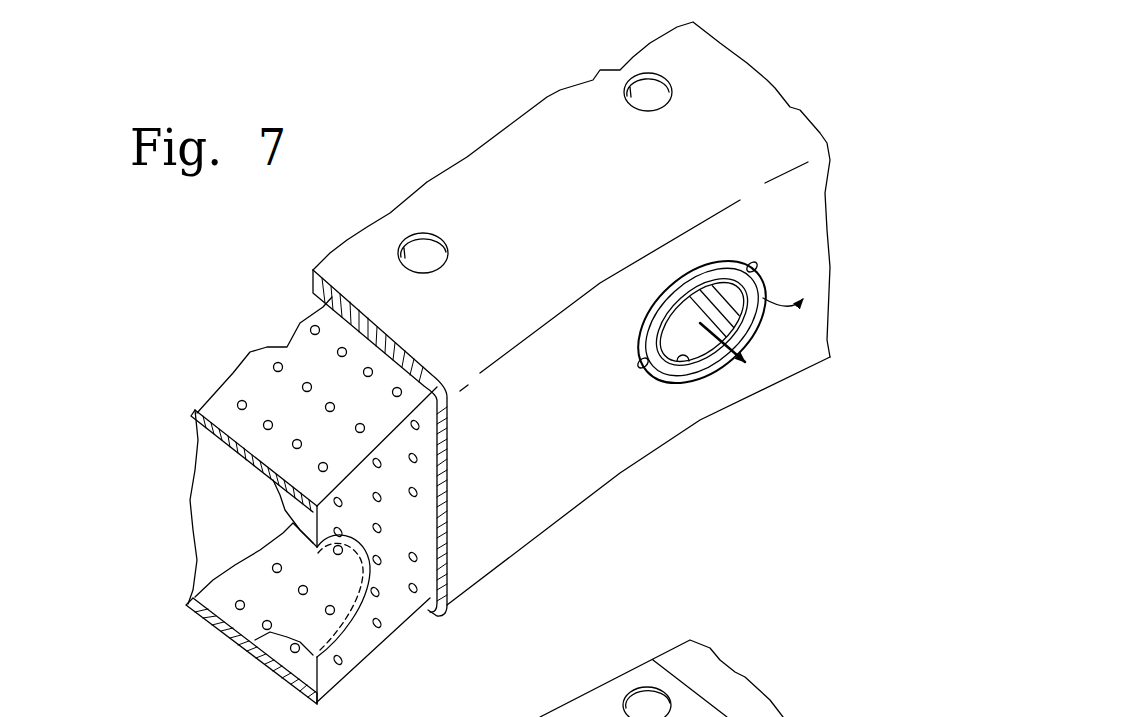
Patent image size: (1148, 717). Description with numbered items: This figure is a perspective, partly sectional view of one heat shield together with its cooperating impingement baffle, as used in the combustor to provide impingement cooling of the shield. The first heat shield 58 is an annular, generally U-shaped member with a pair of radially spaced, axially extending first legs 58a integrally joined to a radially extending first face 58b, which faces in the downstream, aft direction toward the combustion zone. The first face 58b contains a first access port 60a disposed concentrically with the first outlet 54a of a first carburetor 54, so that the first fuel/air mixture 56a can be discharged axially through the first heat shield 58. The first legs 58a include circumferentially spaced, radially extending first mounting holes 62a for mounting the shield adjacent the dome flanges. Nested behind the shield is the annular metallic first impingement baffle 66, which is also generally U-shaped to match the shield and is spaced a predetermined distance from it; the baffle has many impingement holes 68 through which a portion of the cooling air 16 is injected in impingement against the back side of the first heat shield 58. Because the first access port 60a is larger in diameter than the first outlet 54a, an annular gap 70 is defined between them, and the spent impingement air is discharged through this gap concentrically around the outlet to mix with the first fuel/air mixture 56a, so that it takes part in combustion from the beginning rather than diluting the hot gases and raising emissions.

The cooling air 16 is at (618, 368).
The first carburetor 54 is at (181, 533).
The first outlet 54a is at (687, 366).
The first fuel/air mixture 56a is at (752, 370).
The first heat shield 58 is at (778, 82).
The first leg 58a is at (412, 348).
The first face 58b is at (517, 510).
The first access port 60a is at (758, 266).
The first mounting hole 62a is at (657, 74).
The first impingement baffle 66 is at (250, 385).
The impingement hole 68 is at (285, 363).
The annular gap 70 is at (746, 257).